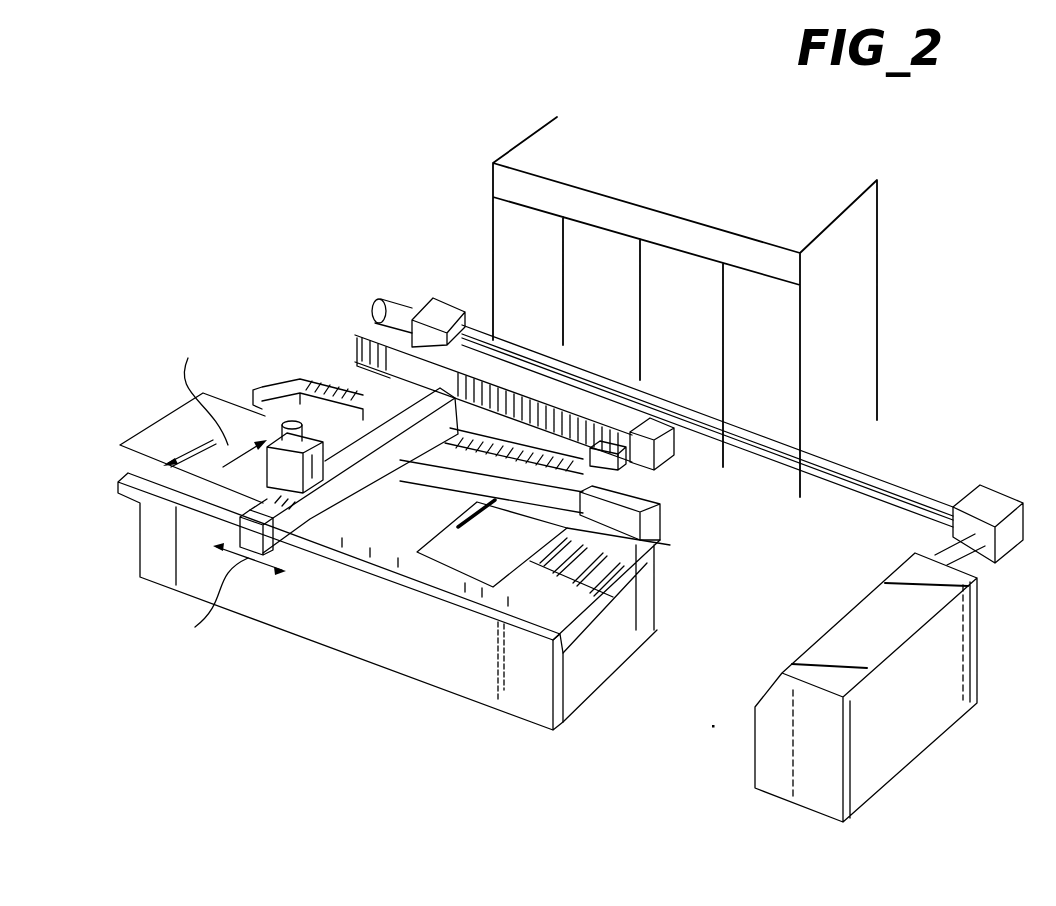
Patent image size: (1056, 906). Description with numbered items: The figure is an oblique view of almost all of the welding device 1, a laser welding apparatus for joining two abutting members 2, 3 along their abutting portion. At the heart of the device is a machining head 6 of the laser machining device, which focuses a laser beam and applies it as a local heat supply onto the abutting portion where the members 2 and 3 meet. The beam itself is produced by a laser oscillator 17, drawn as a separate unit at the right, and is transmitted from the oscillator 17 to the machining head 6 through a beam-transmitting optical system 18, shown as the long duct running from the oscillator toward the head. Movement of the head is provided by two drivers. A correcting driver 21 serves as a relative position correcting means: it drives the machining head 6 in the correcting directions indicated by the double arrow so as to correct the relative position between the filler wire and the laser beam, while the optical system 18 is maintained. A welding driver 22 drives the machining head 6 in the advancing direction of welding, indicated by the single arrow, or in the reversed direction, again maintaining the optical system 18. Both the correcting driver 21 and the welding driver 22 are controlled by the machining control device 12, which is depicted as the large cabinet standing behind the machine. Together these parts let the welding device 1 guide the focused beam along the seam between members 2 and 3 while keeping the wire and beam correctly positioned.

The welding device 1 is at (412, 249).
The abutting member 2 is at (176, 425).
The abutting member 3 is at (500, 550).
The machining head 6 is at (310, 473).
The machining control device 12 is at (863, 272).
The laser oscillator 17 is at (925, 718).
The optical system 18 is at (905, 490).
The correcting driver 21 is at (370, 333).
The welding driver 22 is at (240, 535).